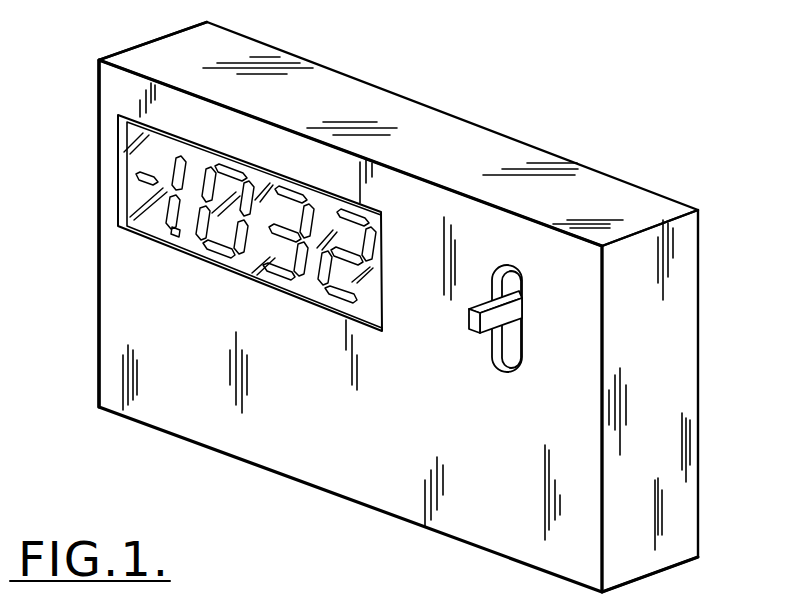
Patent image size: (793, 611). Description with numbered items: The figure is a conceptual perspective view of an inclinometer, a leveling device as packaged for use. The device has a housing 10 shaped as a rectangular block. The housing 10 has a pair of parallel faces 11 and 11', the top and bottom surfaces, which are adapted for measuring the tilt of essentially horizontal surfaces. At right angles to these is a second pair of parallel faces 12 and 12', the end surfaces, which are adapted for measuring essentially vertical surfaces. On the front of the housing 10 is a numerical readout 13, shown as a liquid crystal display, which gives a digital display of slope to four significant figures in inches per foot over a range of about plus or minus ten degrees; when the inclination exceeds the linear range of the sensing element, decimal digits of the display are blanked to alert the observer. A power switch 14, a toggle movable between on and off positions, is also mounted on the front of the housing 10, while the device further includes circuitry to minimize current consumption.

The housing 10 is at (98, 395).
The parallel face 11 is at (651, 583).
The parallel face 11' is at (398, 134).
The parallel face 12 is at (687, 401).
The parallel face 12' is at (153, 206).
The numerical readout 13 is at (118, 216).
The power switch 14 is at (512, 310).